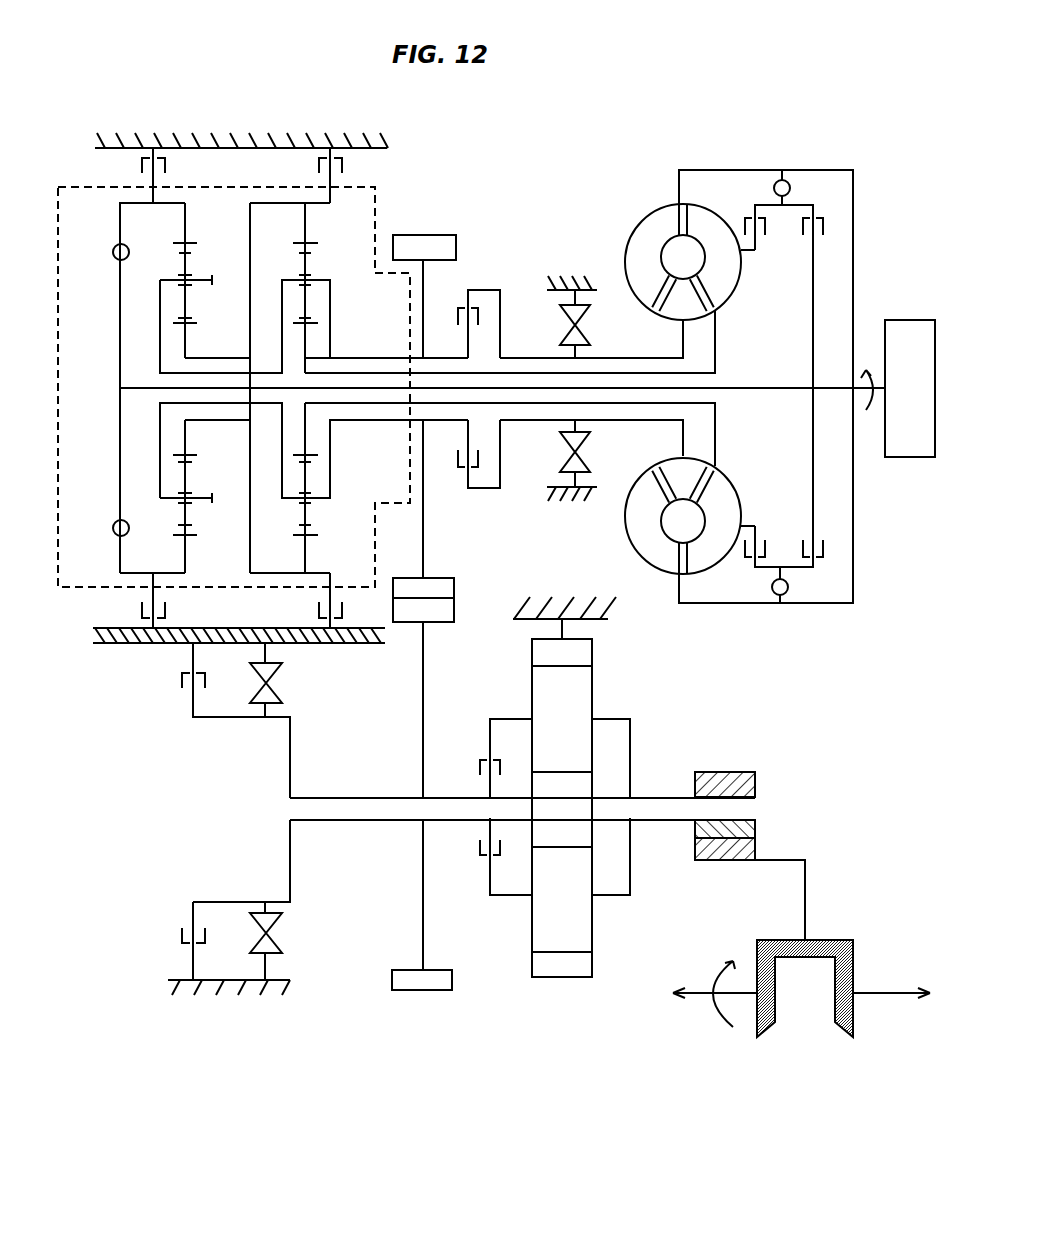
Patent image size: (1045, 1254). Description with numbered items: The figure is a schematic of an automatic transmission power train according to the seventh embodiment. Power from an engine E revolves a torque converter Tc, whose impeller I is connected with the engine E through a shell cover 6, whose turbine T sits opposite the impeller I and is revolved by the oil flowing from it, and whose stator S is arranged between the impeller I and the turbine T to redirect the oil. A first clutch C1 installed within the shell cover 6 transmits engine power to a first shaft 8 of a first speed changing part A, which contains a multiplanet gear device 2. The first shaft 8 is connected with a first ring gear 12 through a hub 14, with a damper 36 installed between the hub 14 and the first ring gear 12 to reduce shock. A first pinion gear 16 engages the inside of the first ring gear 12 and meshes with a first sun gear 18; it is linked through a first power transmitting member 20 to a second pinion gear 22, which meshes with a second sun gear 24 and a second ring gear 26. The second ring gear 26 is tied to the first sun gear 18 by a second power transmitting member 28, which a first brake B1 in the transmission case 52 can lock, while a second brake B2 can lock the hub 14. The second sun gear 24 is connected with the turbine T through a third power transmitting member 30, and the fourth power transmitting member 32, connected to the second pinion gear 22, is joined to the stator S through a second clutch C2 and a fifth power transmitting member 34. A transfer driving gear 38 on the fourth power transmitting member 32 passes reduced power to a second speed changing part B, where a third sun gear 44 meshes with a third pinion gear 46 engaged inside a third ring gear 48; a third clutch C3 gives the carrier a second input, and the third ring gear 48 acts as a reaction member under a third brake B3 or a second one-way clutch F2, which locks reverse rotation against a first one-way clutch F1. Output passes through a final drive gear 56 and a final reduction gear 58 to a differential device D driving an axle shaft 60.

The multiplanet gear device 2 is at (72, 187).
The shell cover 6 is at (766, 170).
The first shaft 8 is at (768, 388).
The first ring gear 12 is at (185, 243).
The hub 14 is at (120, 322).
The first pinion gear 16 is at (201, 313).
The first sun gear 18 is at (195, 330).
The first power transmitting member 20 is at (164, 375).
The second pinion gear 22 is at (318, 252).
The second sun gear 24 is at (320, 322).
The second ring gear 26 is at (305, 243).
The second power transmitting member 28 is at (250, 232).
The third power transmitting member 30 is at (712, 378).
The fourth power transmitting member 32 is at (330, 300).
The fifth power transmitting member 34 is at (524, 358).
The damper 36 is at (114, 254).
The transfer driving gear 38 is at (456, 246).
The third sun gear 44 is at (597, 790).
The third pinion gear 46 is at (586, 698).
The third ring gear 48 is at (454, 601).
The transmission case 52 is at (252, 146).
The final drive gear 56 is at (758, 782).
The final reduction gear 58 is at (758, 846).
The axle shaft 60 is at (901, 986).
The first speed changing part A is at (396, 213).
The second speed changing part B is at (312, 1038).
The first brake B1 is at (348, 388).
The second brake B2 is at (171, 388).
The third brake B3 is at (217, 819).
The first clutch C1 is at (799, 381).
The second clutch C2 is at (468, 385).
The third clutch C3 is at (478, 827).
The differential device D is at (707, 1059).
The engine E is at (910, 388).
The first one-way clutch F1 is at (582, 388).
The second one-way clutch F2 is at (281, 811).
The impeller I is at (634, 232).
The stator S is at (672, 316).
The turbine T is at (736, 276).
The torque converter Tc is at (695, 154).